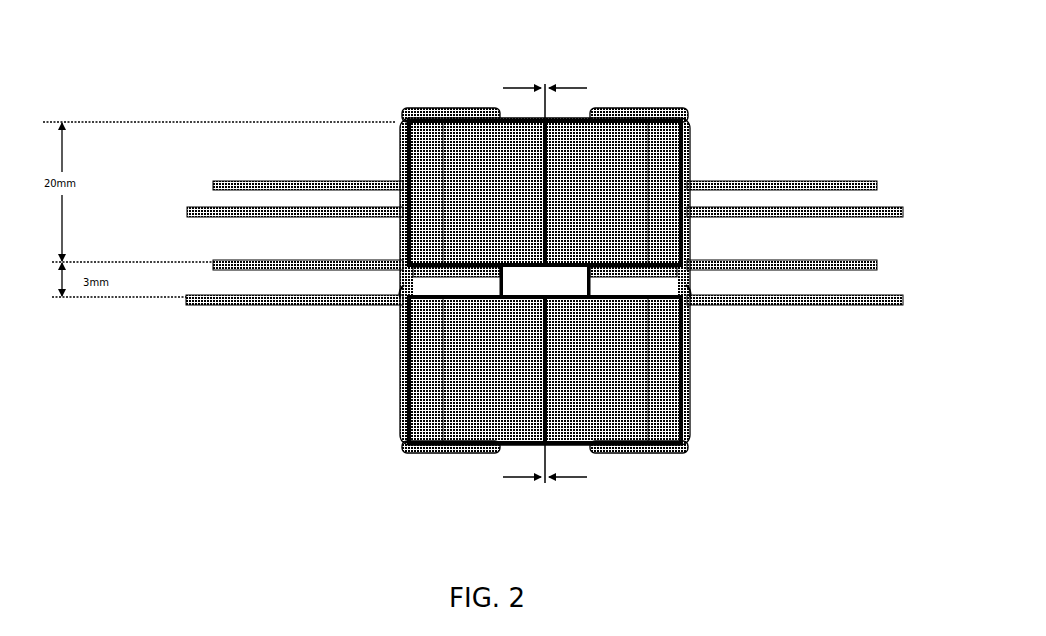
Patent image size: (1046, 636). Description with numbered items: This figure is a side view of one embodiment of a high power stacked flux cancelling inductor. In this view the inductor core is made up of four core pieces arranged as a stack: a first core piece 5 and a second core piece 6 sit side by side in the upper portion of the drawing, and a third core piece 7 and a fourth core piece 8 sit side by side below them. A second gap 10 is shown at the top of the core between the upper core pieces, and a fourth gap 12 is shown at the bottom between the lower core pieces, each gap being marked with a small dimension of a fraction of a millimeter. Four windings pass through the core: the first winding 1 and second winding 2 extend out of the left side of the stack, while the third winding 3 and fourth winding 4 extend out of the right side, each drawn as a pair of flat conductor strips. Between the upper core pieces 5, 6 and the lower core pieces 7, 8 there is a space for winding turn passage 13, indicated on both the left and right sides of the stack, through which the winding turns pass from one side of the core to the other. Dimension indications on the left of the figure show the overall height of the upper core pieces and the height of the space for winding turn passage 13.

The first winding 1 is at (213, 184).
The second winding 2 is at (213, 264).
The third winding 3 is at (878, 184).
The fourth winding 4 is at (878, 263).
The first core piece 1A 5 is at (482, 142).
The second core piece 1B 6 is at (632, 149).
The third core piece 2A 7 is at (410, 362).
The fourth core piece 2B 8 is at (690, 362).
The second gap 10 is at (543, 53).
The fourth gap 12 is at (543, 512).
The space for winding turn passage 13 is at (398, 305).